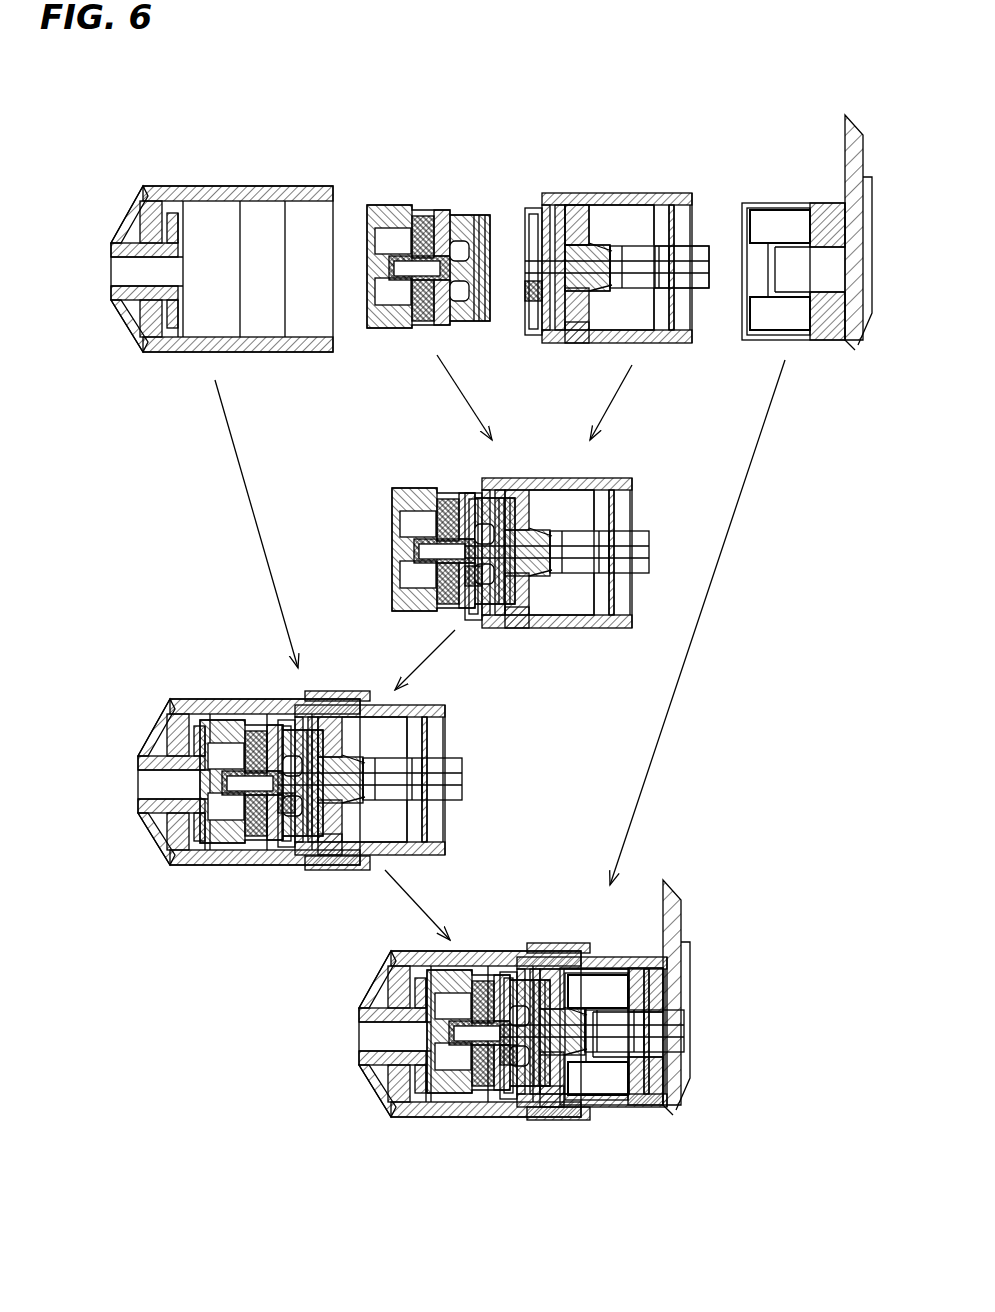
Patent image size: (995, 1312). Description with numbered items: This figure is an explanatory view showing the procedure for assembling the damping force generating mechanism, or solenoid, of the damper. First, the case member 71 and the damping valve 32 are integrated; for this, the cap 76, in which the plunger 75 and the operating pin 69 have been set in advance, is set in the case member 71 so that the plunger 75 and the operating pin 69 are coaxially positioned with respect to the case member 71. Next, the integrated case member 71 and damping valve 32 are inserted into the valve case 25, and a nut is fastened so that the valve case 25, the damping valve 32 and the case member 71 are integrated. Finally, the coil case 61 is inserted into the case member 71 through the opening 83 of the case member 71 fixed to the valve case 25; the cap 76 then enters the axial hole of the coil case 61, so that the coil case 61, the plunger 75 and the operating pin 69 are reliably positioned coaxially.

The valve case 25 is at (217, 179).
The damping valve 32 is at (432, 195).
The case member 71 is at (595, 190).
The coil case 61 is at (815, 190).
The cap 76 is at (600, 245).
The plunger 75 is at (641, 262).
The operating pin 69 is at (682, 246).
The opening 83 is at (445, 835).